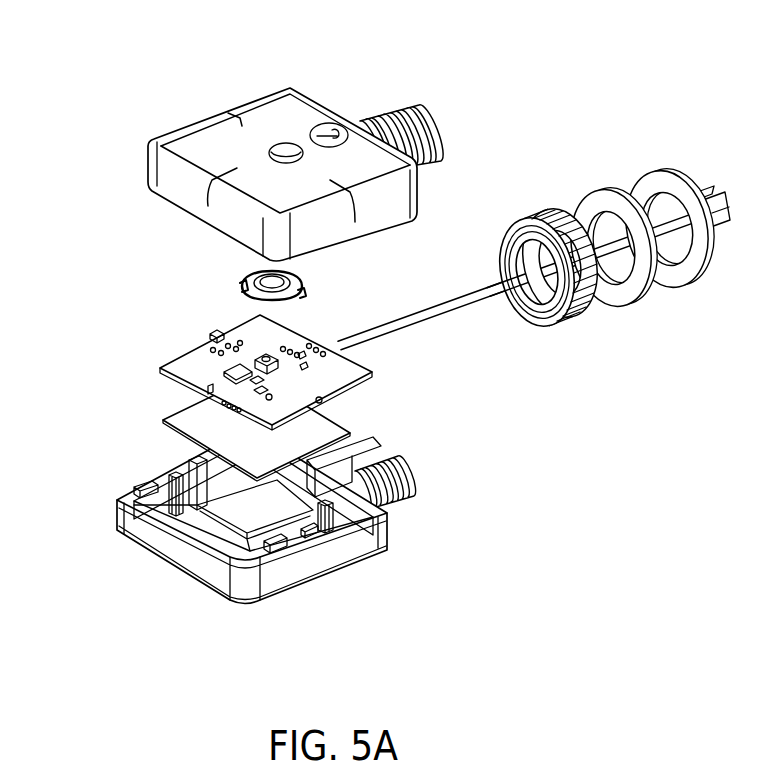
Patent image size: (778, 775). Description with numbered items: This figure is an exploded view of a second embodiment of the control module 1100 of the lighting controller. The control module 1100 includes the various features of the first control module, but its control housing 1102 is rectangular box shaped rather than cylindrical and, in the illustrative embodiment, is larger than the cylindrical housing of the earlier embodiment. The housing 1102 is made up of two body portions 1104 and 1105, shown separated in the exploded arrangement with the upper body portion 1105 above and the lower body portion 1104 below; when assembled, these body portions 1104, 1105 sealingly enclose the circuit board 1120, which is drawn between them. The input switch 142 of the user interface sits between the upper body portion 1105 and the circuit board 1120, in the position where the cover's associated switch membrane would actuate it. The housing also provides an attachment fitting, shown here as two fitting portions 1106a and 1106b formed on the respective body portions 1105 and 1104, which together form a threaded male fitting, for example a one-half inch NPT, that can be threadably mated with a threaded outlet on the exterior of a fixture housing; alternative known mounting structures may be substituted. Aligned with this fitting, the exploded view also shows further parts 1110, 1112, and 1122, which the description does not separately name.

The control module 1100 is at (398, 598).
The control housing 1102 is at (238, 604).
The body portion 1104 is at (118, 510).
The body portion 1105 is at (148, 170).
The attachment fitting portion 1106a is at (382, 112).
The attachment fitting portion 1106b is at (412, 488).
The washers 1110 is at (652, 302).
The nut 1112 is at (573, 335).
The circuit board 1120 is at (160, 360).
The cable 1122 is at (453, 310).
The input switch 142 is at (303, 275).